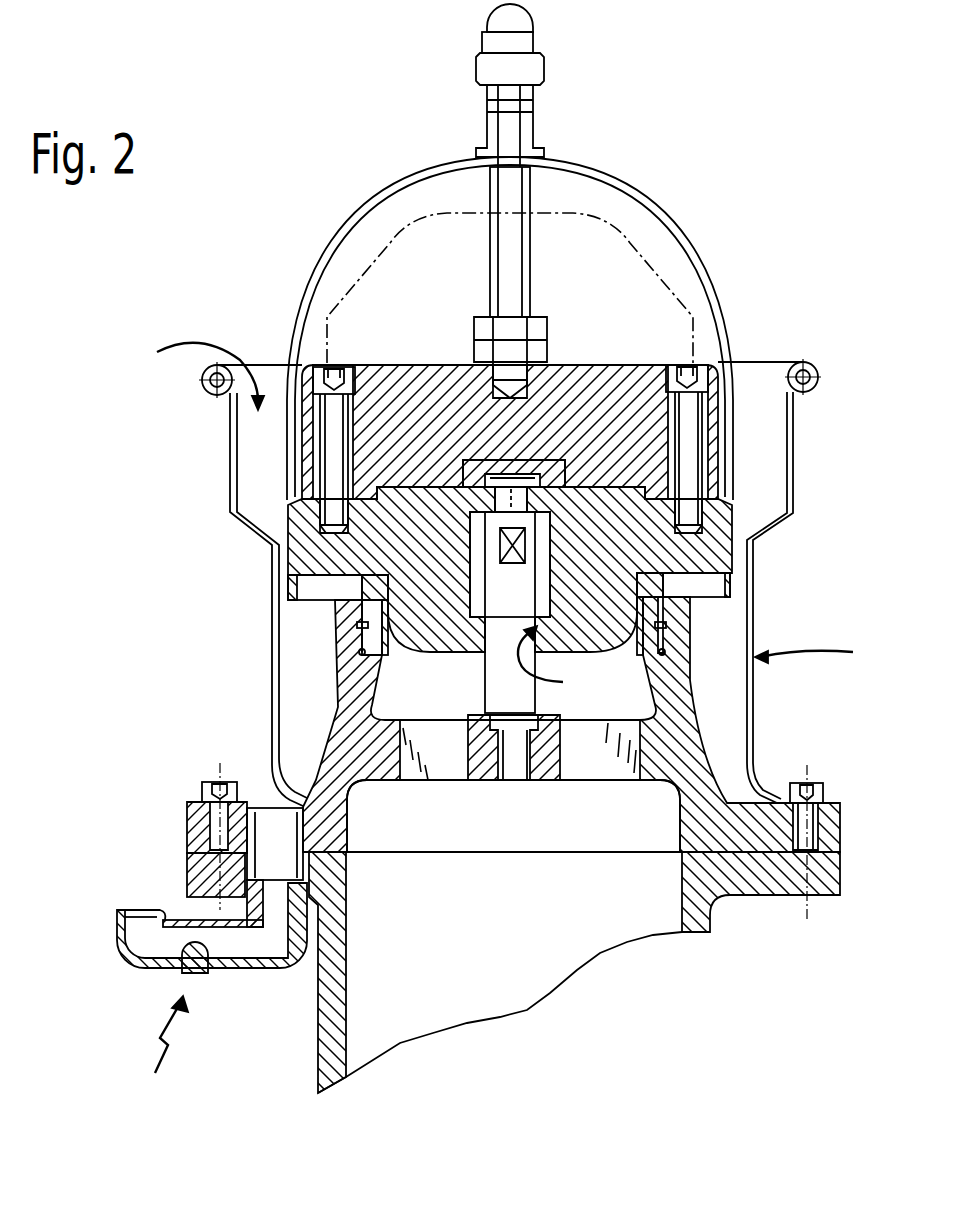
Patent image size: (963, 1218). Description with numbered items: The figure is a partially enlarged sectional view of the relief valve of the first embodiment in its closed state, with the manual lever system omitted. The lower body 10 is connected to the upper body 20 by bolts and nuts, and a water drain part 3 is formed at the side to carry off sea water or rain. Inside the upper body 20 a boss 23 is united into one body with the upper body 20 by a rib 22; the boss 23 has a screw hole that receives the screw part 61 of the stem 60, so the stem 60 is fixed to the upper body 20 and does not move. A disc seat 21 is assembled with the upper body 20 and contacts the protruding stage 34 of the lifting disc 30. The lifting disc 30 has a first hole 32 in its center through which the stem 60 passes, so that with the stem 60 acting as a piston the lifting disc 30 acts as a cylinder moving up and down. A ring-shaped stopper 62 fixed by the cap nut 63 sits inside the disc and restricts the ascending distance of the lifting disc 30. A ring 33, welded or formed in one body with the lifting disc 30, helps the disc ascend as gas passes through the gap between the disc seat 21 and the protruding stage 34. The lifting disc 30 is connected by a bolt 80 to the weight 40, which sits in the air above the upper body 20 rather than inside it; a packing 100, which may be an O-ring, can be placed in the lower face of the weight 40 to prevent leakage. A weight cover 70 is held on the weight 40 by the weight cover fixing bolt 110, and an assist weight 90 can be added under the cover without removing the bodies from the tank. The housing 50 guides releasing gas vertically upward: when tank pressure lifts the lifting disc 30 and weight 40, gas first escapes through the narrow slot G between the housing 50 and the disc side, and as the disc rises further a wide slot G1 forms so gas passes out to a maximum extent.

The water drain part 3 is at (212, 943).
The lower body 10 is at (328, 1068).
The upper body 20 is at (340, 750).
The disc seat 21 is at (372, 606).
The rib 22 is at (627, 760).
The boss 23 is at (547, 768).
The lifting disc 30 is at (720, 520).
The first hole 32 is at (568, 665).
The ring 33 is at (732, 588).
The protruding stage 34 is at (365, 583).
The weight 40 is at (628, 365).
The housing 50 is at (803, 639).
The stem 60 is at (508, 678).
The screw part 61 is at (497, 755).
The stopper 62 is at (453, 497).
The cap nut 63 is at (533, 458).
The weight cover 70 is at (590, 175).
The bolt 80 is at (690, 428).
The assist weight 90 is at (615, 232).
The packing 100 is at (483, 487).
The weight cover fixing bolt 110 is at (503, 200).
The narrow slot G is at (282, 570).
The wide slot G1 is at (217, 574).